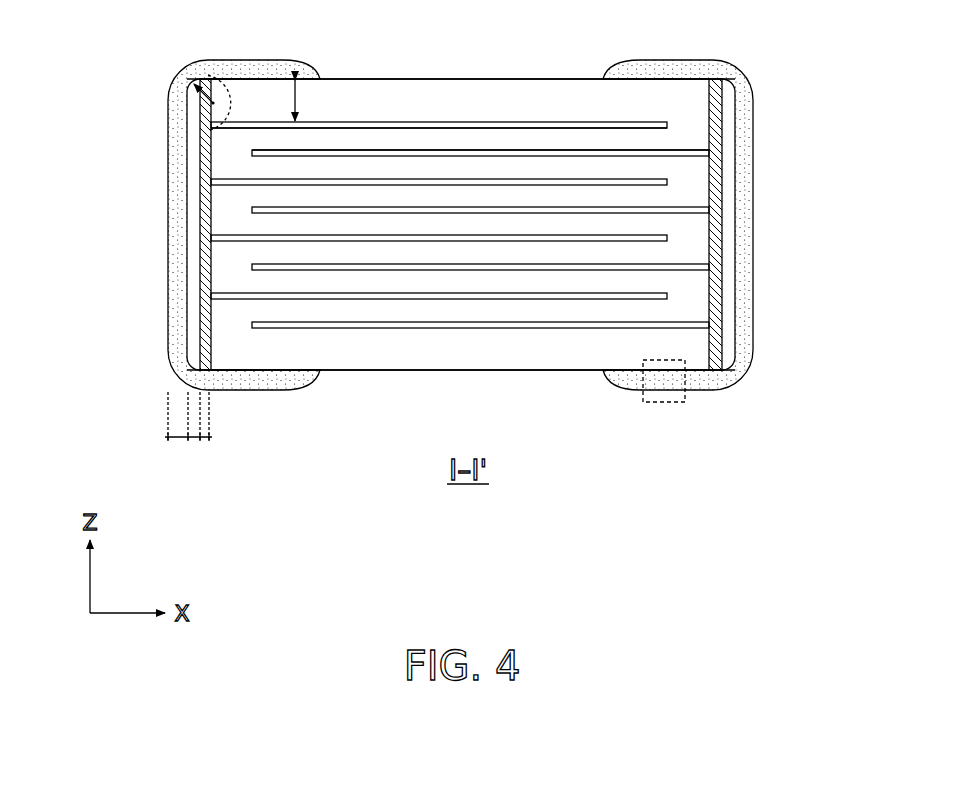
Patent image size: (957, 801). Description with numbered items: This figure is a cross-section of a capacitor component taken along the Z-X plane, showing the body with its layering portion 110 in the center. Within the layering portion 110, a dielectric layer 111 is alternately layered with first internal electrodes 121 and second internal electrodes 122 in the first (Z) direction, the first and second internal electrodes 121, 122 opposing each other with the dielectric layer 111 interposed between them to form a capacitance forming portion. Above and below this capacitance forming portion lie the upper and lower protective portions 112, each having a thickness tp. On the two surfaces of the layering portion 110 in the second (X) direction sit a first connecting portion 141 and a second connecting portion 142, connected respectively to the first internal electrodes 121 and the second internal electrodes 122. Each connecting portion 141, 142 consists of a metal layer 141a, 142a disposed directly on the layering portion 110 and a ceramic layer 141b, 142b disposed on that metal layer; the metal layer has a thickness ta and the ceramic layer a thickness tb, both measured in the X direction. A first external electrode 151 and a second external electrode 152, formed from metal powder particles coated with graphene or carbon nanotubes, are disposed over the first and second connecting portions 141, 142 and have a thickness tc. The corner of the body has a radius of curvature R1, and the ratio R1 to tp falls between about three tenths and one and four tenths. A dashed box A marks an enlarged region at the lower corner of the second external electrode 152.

The layering portion 110 is at (400, 78).
The dielectric layer 111 is at (518, 140).
The protective portion 112 is at (450, 95).
The first internal electrode 121 is at (490, 122).
The second internal electrode 122 is at (566, 155).
The first connecting portion 141 is at (179, 225).
The metal layer 141a is at (205, 170).
The ceramic layer 141b is at (190, 222).
The second connecting portion 142 is at (746, 225).
The metal layer 142a is at (722, 170).
The ceramic layer 142b is at (730, 222).
The first external electrode 151 is at (179, 200).
The second external electrode 152 is at (746, 200).
The radius of curvature of a corner of the body R1 is at (247, 85).
The thickness of the protective portion tp is at (300, 100).
The thickness of the metal layer ta is at (205, 439).
The thickness of the ceramic layer tb is at (194, 439).
The thickness of the external electrode tc is at (172, 439).
The enlarged region A is at (675, 403).